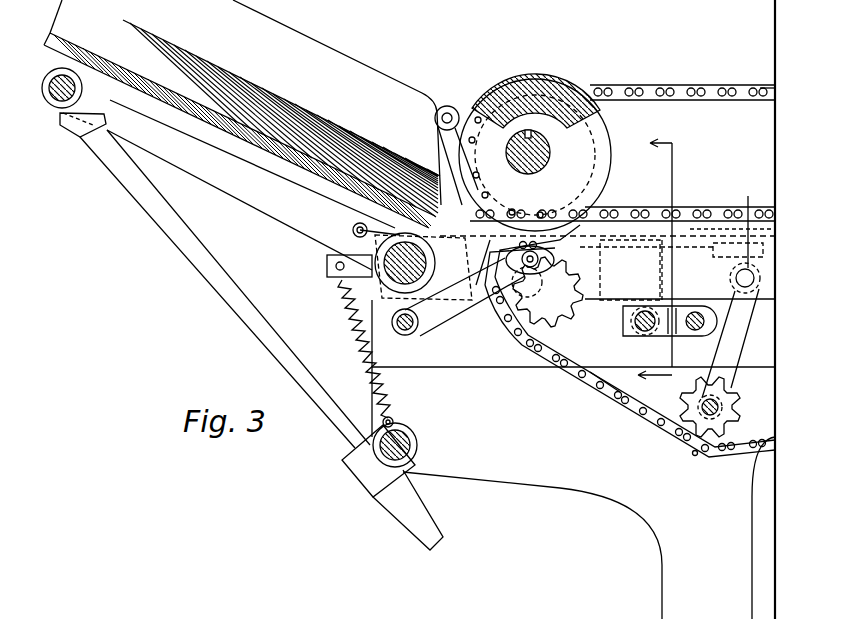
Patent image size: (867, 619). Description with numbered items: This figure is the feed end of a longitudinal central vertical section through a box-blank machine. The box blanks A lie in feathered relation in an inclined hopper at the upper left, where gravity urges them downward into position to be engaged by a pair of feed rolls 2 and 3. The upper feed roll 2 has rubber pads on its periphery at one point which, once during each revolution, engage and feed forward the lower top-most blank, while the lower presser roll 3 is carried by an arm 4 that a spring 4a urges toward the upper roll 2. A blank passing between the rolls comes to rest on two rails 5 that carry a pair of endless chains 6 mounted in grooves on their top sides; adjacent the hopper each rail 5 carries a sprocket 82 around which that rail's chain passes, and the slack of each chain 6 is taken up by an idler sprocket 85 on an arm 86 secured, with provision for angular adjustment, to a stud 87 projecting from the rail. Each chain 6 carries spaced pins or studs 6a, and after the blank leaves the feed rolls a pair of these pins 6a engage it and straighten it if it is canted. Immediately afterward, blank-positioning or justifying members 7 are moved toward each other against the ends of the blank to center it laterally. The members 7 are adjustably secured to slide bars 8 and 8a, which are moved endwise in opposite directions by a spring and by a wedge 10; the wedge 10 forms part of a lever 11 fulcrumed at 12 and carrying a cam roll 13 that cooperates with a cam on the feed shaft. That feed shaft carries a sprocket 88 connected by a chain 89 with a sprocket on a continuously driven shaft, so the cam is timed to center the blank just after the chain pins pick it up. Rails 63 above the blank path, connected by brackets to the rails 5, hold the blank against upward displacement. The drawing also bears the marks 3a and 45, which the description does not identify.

The box blanks A is at (290, 103).
The feed roll 2 is at (600, 108).
The lower presser roll 3 is at (560, 296).
The direction of movement 3a is at (661, 257).
The arm 4 is at (439, 290).
The spring 4a is at (362, 346).
The rails 5 is at (731, 278).
The endless chains 6 is at (597, 396).
The pins or studs 6a is at (693, 455).
The blank-positioning or justifying members 7 is at (712, 205).
The slide bar 8 is at (637, 320).
The slide bar 8a is at (675, 333).
The wedge 10 is at (660, 263).
The lever 11 is at (476, 285).
The fulcrum 12 is at (406, 324).
The cam roll 13 is at (449, 105).
The drum shaft 45 is at (516, 178).
The rails 63 is at (722, 205).
The sprocket 82 is at (538, 338).
The idler sprocket 85 is at (690, 425).
The arm 86 is at (730, 343).
The stud 87 is at (752, 220).
The sprocket 88 is at (598, 138).
The chain 89 is at (776, 92).